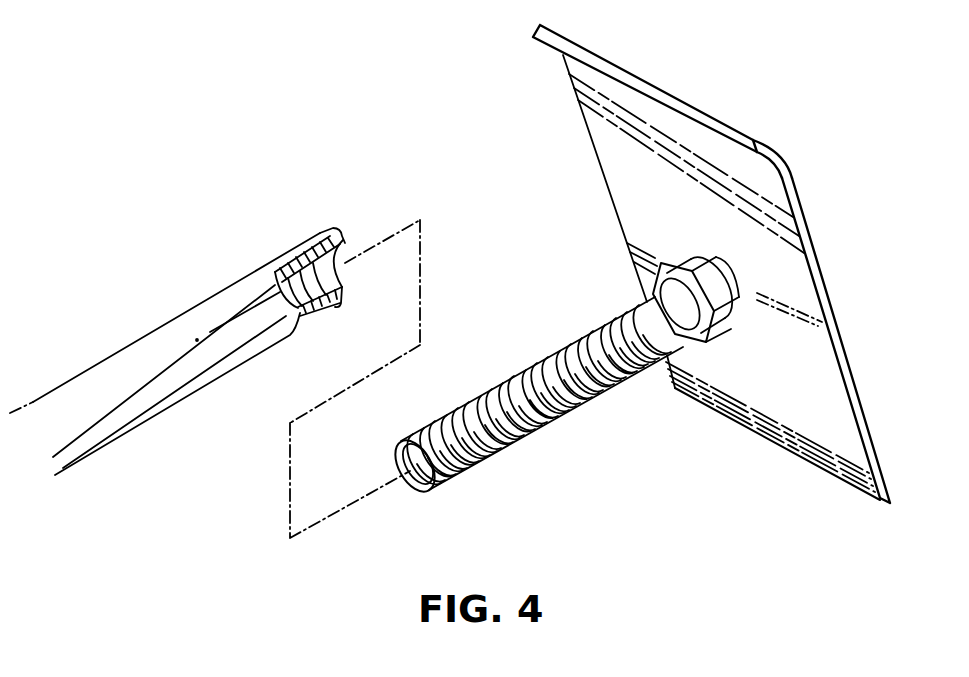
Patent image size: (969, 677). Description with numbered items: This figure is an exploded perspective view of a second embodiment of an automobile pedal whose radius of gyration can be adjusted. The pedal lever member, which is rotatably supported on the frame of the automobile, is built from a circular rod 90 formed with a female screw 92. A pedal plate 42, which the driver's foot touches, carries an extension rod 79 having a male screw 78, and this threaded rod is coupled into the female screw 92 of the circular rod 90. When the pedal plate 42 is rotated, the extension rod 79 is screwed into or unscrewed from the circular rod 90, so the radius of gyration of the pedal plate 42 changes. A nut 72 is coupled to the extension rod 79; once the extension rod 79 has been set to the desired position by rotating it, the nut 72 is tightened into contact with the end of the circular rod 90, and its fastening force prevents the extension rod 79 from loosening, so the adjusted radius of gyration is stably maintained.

The pedal plate 42 is at (840, 320).
The nut 72 is at (658, 247).
The male screw 78 is at (546, 427).
The extension rod 79 is at (535, 395).
The circular rod 90 is at (104, 338).
The female screw 92 is at (312, 262).